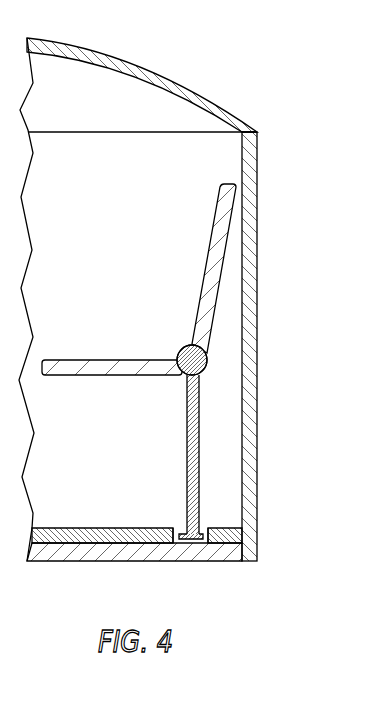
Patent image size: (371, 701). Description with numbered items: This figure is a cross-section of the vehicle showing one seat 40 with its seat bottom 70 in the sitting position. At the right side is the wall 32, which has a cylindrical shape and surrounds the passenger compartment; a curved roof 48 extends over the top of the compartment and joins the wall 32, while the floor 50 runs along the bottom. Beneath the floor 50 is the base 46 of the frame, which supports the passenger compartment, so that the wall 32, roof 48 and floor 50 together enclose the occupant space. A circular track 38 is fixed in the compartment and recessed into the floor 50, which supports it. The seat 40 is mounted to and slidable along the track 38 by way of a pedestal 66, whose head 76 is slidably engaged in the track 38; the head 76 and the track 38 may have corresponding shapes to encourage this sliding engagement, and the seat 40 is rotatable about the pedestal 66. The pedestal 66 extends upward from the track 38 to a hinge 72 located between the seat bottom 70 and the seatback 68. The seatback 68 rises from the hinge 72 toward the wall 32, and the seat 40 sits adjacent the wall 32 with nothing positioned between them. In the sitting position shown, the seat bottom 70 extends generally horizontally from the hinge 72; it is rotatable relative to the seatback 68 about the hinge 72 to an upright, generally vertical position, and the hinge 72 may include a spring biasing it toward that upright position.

The wall 32 is at (258, 197).
The circular track 38 is at (199, 544).
The seat 40 is at (117, 290).
The base 46 is at (128, 562).
The roof 48 is at (217, 90).
The floor 50 is at (100, 527).
The pedestal 66 is at (197, 460).
The seatback 68 is at (215, 220).
The seat bottom 70 is at (105, 358).
The hinge 72 is at (183, 347).
The head 76 is at (182, 541).